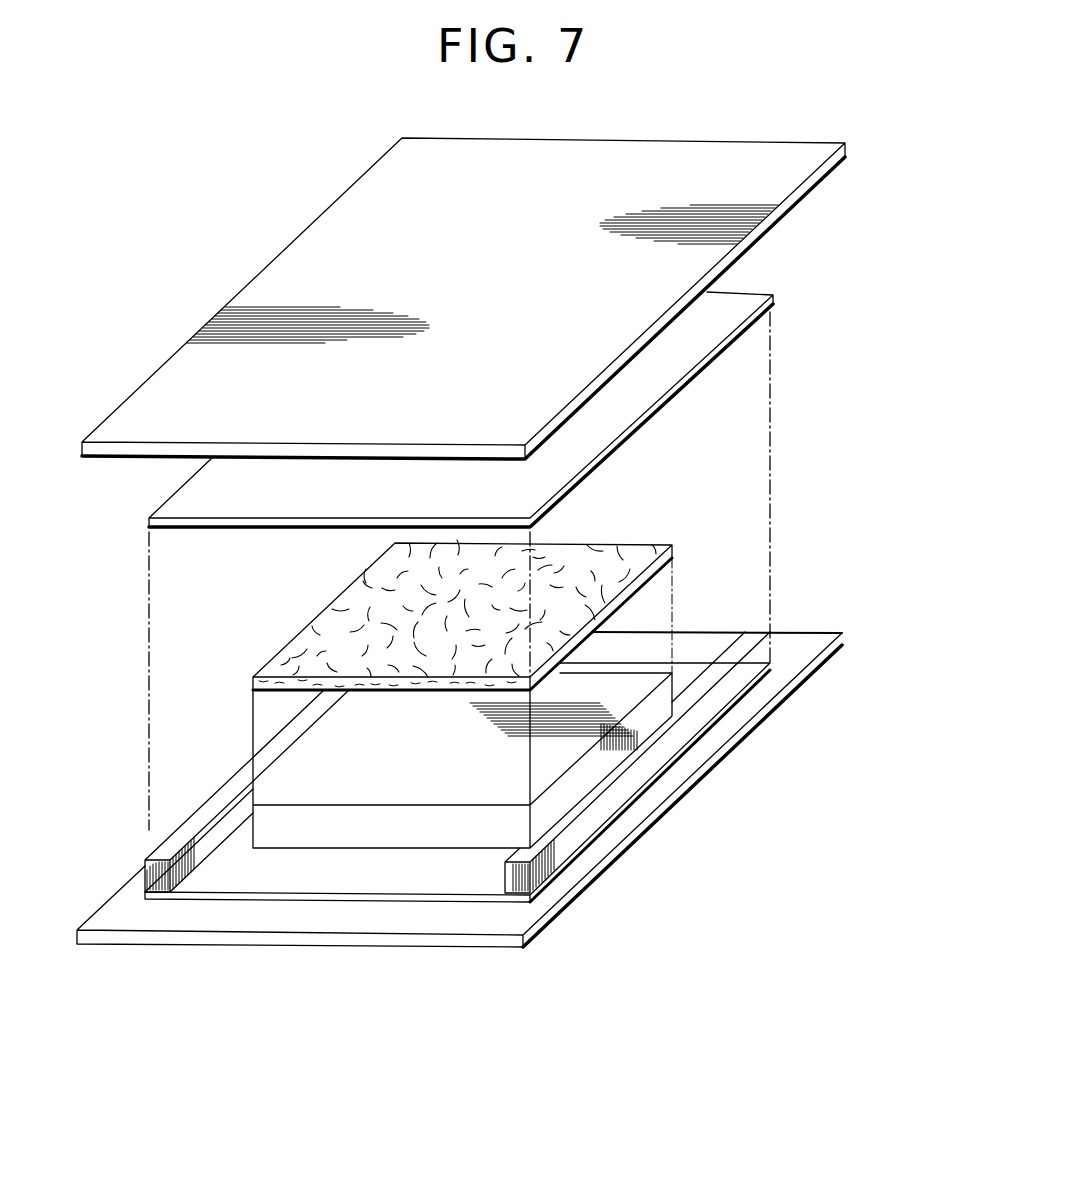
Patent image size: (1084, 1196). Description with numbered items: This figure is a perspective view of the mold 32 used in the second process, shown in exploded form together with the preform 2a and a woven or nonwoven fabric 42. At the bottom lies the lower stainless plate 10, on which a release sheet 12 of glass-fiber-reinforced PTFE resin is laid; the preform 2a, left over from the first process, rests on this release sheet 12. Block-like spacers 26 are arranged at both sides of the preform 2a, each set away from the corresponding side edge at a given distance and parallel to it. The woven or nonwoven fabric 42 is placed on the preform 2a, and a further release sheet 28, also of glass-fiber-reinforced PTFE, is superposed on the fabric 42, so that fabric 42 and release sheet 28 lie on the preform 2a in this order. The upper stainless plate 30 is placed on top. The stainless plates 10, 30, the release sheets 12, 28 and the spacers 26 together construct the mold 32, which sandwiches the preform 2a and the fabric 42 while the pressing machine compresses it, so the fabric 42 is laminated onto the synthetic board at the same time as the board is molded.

The stainless plate 30 is at (795, 196).
The release sheet 28 is at (686, 349).
The mold 32 is at (864, 441).
The woven or nonwoven fabric 42 is at (330, 607).
The preform 2a is at (622, 692).
The spacers 26 is at (228, 792).
The release sheet 12 is at (254, 894).
The stainless plate 10 is at (347, 936).